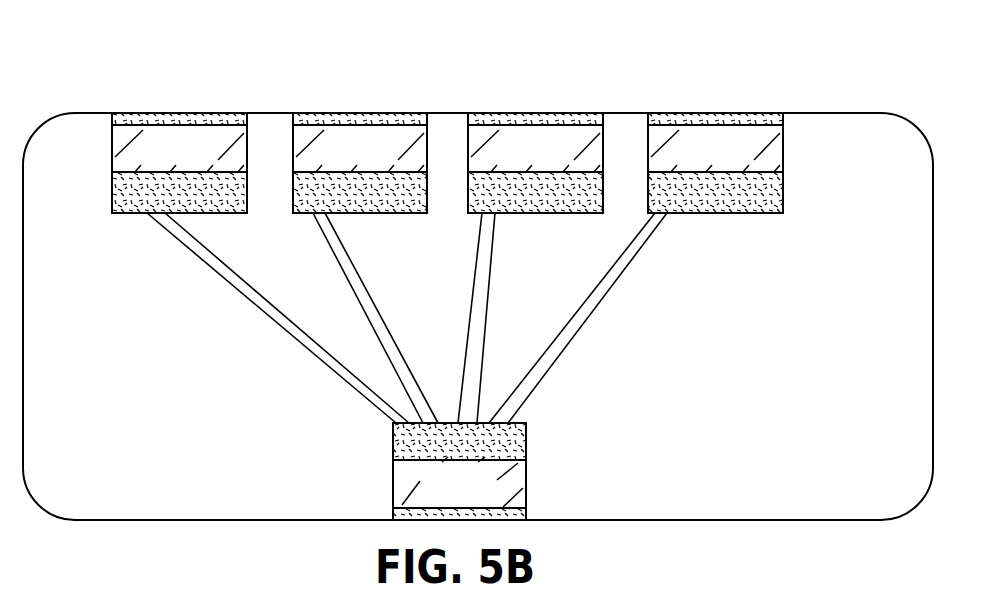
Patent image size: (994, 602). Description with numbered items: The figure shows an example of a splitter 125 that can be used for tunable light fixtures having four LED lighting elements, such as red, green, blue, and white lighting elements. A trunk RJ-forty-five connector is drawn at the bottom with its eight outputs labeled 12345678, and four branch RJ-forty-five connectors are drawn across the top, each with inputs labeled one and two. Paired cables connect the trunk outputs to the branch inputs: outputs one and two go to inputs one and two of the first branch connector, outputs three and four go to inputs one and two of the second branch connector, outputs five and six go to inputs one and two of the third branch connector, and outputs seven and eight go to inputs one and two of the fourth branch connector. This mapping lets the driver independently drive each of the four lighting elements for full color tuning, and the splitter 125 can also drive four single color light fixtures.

The splitter 125 is at (452, 78).
The connector pins 1-8 of trunk RJ45-1B connector 12345678 is at (459, 471).